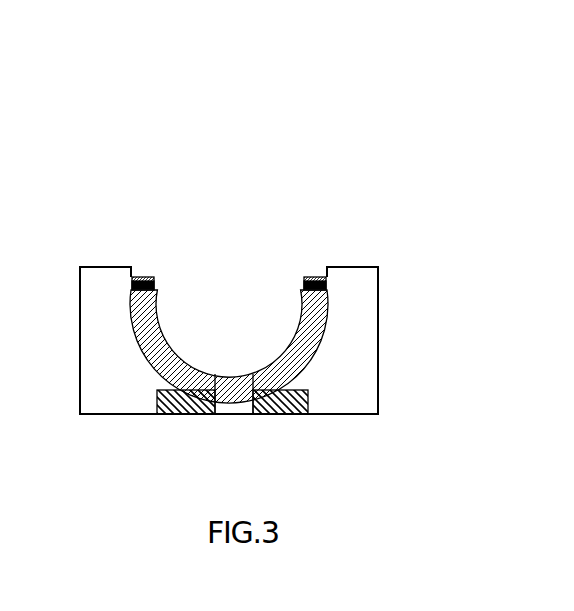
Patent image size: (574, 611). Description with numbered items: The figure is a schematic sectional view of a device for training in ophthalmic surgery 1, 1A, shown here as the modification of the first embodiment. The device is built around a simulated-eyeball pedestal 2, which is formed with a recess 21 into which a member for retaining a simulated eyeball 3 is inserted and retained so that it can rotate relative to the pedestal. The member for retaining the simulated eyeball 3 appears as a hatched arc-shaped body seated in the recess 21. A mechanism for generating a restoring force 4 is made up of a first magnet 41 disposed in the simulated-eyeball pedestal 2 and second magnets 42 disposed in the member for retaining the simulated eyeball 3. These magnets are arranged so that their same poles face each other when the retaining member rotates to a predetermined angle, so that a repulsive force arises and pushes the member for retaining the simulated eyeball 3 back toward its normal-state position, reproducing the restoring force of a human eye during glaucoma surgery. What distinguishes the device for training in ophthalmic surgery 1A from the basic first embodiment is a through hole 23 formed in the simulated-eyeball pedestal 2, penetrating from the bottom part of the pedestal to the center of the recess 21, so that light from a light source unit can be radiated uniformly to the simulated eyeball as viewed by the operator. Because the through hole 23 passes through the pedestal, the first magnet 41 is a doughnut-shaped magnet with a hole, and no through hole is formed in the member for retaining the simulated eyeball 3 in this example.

The device for training in ophthalmic surgery 1 is at (205, 137).
The device for training in ophthalmic surgery 1A is at (253, 345).
The simulated-eyeball pedestal 2 is at (362, 325).
The recess 21 is at (242, 290).
The through hole 23 is at (234, 400).
The member for retaining a simulated eyeball 3 is at (172, 320).
The mechanism for generating a restoring force 4 is at (253, 347).
The first magnet 41 is at (197, 398).
The second magnets 42 is at (142, 276).